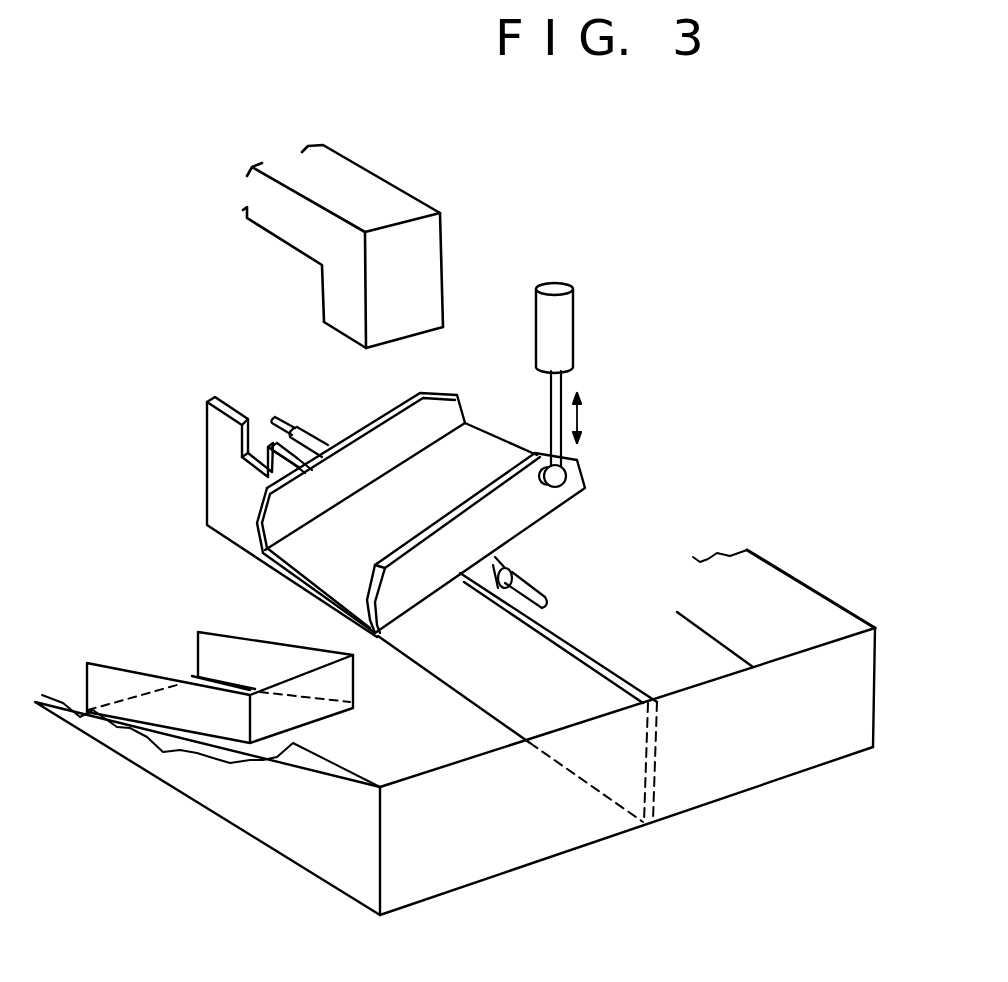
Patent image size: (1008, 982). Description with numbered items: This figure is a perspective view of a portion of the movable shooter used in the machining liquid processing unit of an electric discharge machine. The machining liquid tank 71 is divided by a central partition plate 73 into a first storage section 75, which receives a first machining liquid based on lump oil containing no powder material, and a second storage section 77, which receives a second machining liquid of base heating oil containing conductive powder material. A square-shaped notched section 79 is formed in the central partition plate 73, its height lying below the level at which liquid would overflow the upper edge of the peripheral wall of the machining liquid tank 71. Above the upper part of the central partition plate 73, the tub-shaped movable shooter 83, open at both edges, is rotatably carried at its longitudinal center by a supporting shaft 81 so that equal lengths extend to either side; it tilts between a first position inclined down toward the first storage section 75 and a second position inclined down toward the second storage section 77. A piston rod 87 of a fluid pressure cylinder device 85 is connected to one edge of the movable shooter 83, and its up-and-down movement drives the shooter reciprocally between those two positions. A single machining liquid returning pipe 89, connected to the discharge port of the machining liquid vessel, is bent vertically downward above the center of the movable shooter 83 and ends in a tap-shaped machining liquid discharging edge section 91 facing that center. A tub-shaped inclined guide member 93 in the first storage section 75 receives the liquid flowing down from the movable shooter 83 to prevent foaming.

The machining liquid tank 71 is at (455, 732).
The central partition plate 73 is at (580, 690).
The first storage section 75 is at (460, 735).
The second storage section 77 is at (700, 655).
The notched section 79 is at (250, 445).
The supporting shaft 81 is at (533, 593).
The movable shooter 83 is at (427, 573).
The fluid pressure cylinder device 85 is at (562, 332).
The piston rod 87 is at (558, 388).
The machining liquid returning pipe 89 is at (371, 239).
The machining liquid discharging edge section 91 is at (420, 333).
The inclined guide member 93 is at (315, 710).